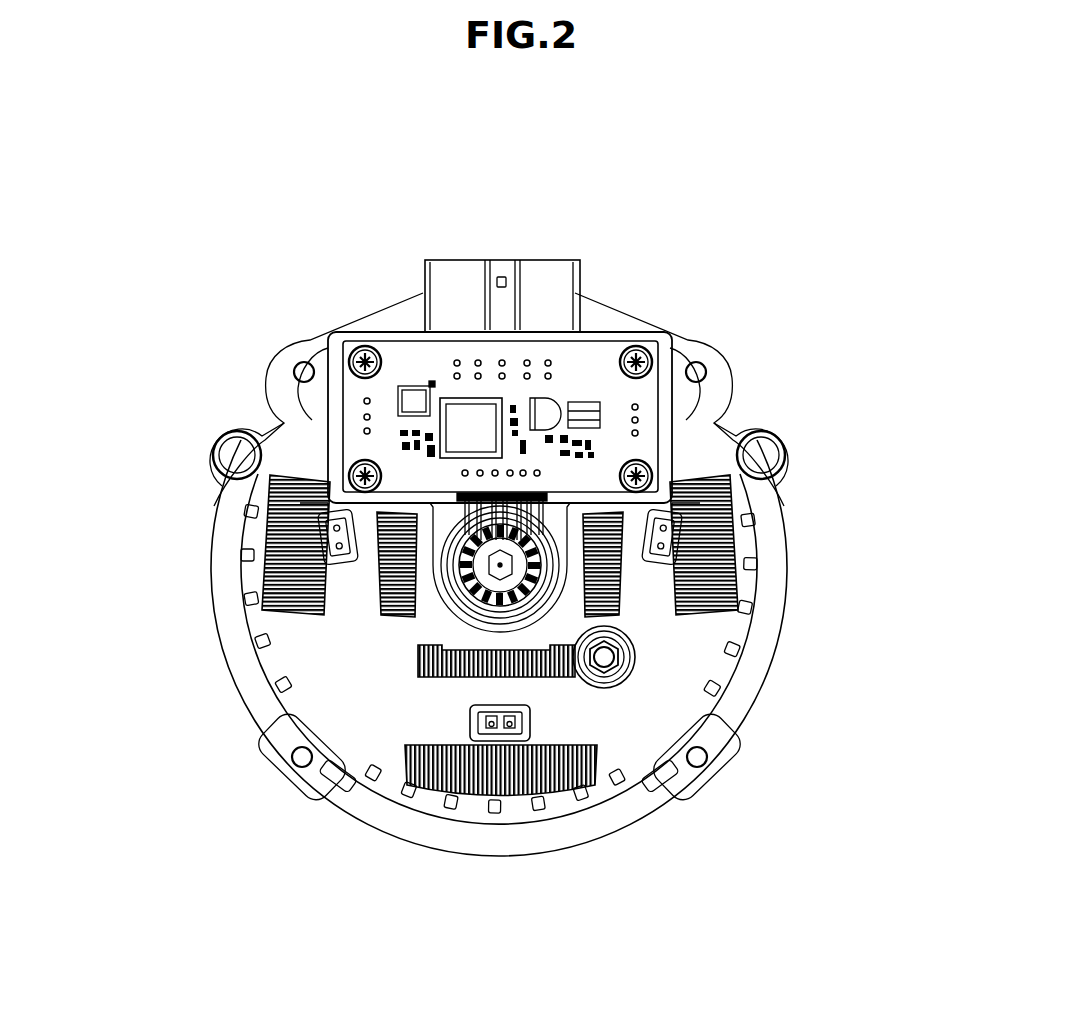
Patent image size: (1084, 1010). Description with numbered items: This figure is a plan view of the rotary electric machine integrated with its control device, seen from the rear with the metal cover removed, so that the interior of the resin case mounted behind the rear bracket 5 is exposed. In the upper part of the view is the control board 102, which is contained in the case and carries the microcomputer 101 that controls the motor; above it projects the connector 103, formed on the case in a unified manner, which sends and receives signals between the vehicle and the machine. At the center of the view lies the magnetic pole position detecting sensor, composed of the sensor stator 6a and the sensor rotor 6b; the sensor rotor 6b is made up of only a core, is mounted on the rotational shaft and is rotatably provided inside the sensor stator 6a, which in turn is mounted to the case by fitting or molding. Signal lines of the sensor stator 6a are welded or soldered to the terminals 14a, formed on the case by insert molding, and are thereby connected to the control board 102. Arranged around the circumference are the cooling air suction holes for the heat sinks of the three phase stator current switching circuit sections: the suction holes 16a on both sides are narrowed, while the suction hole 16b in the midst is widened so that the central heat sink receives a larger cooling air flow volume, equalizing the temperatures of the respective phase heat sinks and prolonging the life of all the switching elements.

The rear bracket 5 is at (623, 823).
The sensor stator 6a is at (612, 668).
The sensor rotor 6b is at (512, 568).
The terminals 14a is at (265, 500).
The cooling air suction hole 16a is at (463, 505).
The cooling air suction hole 16b is at (420, 673).
The microcomputer 101 is at (477, 420).
The control board 102 is at (357, 387).
The connector 103 is at (463, 268).